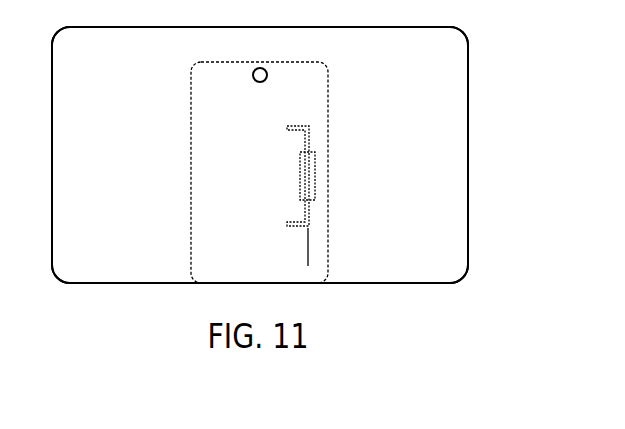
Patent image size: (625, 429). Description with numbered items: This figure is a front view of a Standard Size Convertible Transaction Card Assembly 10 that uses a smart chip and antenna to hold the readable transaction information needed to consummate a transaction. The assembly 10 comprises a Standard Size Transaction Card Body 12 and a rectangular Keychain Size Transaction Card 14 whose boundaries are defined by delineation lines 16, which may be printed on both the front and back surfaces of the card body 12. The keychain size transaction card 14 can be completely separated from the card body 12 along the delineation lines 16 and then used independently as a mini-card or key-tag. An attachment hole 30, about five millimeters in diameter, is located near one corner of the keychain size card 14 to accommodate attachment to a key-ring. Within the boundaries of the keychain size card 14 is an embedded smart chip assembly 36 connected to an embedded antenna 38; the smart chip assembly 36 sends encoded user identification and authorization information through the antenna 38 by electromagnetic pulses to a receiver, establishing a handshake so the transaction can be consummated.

The Standard Size Convertible Transaction Card Assembly 10 is at (514, 64).
The Standard Size Transaction Card Body 12 is at (452, 117).
The rectangular Keychain Size Transaction Card 14 is at (320, 233).
The delineation lines 16 is at (290, 60).
The attachment hole 30 is at (258, 67).
The smart chip assembly 36 is at (316, 150).
The antenna 38 is at (290, 222).